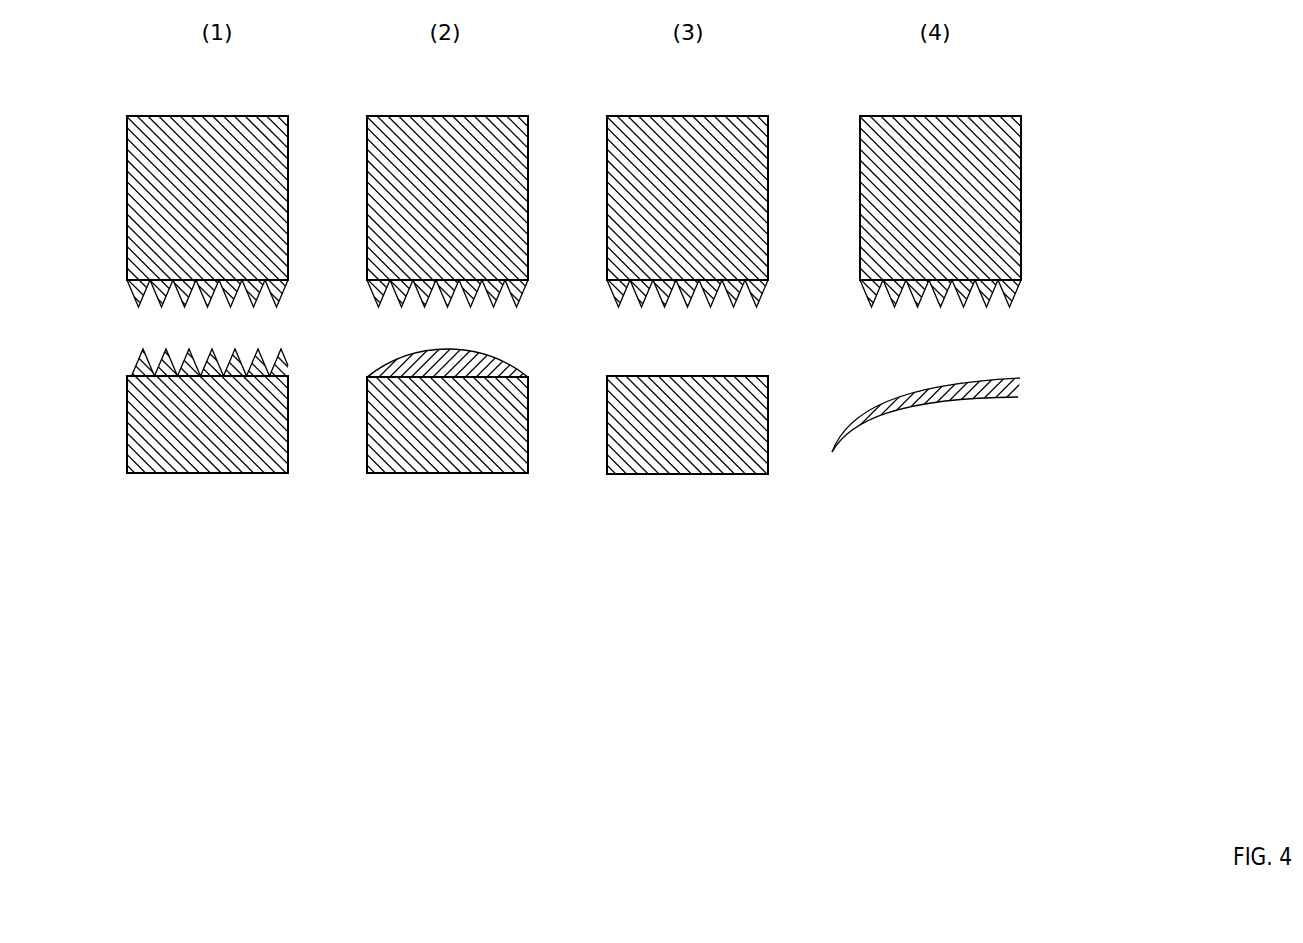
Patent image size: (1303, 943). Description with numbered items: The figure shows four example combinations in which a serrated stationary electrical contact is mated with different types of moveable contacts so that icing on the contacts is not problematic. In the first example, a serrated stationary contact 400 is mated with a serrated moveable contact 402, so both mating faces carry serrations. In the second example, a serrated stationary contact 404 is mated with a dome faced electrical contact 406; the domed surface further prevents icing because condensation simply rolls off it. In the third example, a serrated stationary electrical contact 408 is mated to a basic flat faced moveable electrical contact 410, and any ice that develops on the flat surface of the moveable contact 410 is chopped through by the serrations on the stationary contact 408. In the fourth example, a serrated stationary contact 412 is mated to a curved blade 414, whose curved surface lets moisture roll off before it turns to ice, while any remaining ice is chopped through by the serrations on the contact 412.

The serrated stationary contact 400 is at (651, 250).
The serrated moveable contact 402 is at (651, 250).
The serrated stationary contact 404 is at (651, 250).
The dome faced electrical contact 406 is at (651, 250).
The serrated stationary electrical contact 408 is at (686, 250).
The flat faced moveable electrical contact 410 is at (651, 250).
The serrated stationary contact 412 is at (812, 250).
The curved blade 414 is at (671, 250).